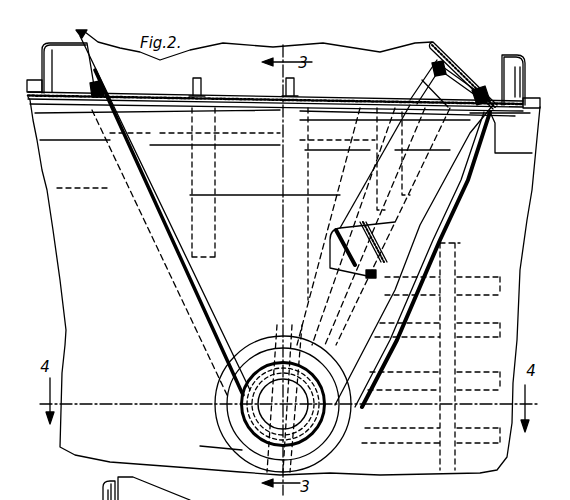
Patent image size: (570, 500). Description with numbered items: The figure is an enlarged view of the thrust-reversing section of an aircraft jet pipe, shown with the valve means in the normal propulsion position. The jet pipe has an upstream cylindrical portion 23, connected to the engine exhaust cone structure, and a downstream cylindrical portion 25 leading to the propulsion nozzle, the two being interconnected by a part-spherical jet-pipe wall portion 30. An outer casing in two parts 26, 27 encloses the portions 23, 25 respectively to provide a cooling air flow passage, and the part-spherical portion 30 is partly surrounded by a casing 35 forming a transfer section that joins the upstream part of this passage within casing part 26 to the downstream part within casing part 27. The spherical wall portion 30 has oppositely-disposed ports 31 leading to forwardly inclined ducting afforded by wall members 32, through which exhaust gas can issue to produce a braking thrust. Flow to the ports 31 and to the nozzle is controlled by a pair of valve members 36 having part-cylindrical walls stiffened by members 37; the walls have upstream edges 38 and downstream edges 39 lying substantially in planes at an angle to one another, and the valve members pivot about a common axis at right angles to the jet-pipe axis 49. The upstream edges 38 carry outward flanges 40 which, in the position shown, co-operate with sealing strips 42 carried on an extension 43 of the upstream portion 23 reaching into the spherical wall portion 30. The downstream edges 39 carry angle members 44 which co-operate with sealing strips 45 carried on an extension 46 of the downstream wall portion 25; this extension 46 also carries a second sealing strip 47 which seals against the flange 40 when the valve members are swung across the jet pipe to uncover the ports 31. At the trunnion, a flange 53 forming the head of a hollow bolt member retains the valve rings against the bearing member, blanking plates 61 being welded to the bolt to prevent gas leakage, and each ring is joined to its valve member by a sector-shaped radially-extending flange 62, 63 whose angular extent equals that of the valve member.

The upstream cylindrical portion 23 is at (95, 152).
The downstream cylindrical portion 25 is at (513, 138).
The outer casing part 26 is at (31, 81).
The outer casing part 27 is at (535, 98).
The part-spherical jet-pipe wall portion 30 is at (95, 88).
The ports 31 is at (120, 92).
The wall members 32 is at (86, 33).
The casing 35 is at (58, 44).
The valve members 36 is at (327, 126).
The stiffening members 37 is at (202, 84).
The upstream edges 38 is at (155, 188).
The downstream edges 39 is at (376, 276).
The outward flanges 40 is at (108, 88).
The sealing strips 42 is at (98, 80).
The extension 43 is at (181, 372).
The angle members 44 is at (476, 140).
The sealing strips 45 is at (485, 97).
The extension 46 is at (478, 88).
The second sealing strip 47 is at (334, 238).
The jet-pipe axis 49 is at (98, 400).
The flange 53 is at (323, 380).
The blanking plates 61 is at (296, 417).
The sector-shaped flange 62 is at (256, 348).
The sector-shaped flange 63 is at (210, 441).